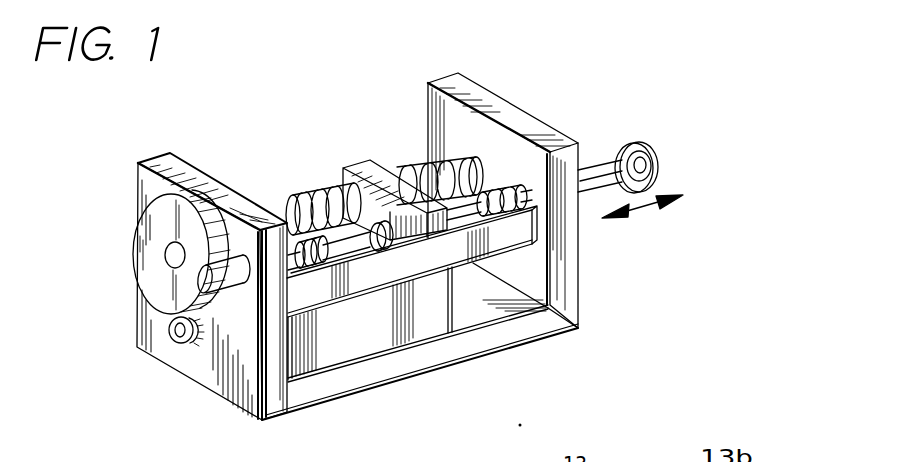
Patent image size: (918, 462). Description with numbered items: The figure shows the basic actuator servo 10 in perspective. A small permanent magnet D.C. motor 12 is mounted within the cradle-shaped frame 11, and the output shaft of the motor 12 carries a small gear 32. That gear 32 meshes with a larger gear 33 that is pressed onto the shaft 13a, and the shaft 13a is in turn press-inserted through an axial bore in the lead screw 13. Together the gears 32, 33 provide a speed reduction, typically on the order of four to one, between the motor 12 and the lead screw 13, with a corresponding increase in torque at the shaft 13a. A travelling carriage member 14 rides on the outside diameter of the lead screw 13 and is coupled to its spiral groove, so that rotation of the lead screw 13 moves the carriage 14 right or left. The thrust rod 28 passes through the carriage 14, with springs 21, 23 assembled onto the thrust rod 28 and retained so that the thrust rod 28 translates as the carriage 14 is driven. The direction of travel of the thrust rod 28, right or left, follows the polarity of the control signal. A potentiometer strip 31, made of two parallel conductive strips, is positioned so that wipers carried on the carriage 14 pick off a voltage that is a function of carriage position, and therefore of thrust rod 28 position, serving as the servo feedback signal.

The apparatus 10 is at (585, 72).
The cradle-shaped frame 11 is at (540, 328).
The motor 12 is at (352, 342).
The lead screw 13 is at (289, 205).
The shaft 13a is at (173, 258).
The travelling carriage member 14 is at (365, 170).
The spring 21 is at (306, 264).
The spring 23 is at (512, 212).
The thrust rod 28 is at (470, 203).
The potentiometer strip 31 is at (429, 258).
The gear 32 is at (177, 343).
The gear 33 is at (145, 233).